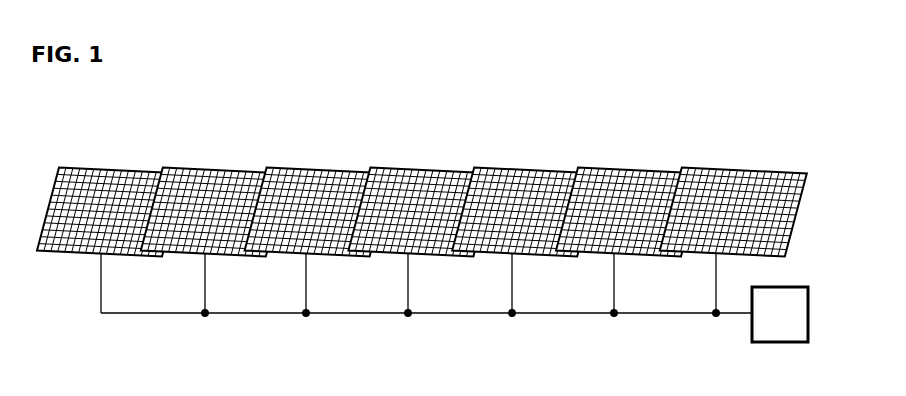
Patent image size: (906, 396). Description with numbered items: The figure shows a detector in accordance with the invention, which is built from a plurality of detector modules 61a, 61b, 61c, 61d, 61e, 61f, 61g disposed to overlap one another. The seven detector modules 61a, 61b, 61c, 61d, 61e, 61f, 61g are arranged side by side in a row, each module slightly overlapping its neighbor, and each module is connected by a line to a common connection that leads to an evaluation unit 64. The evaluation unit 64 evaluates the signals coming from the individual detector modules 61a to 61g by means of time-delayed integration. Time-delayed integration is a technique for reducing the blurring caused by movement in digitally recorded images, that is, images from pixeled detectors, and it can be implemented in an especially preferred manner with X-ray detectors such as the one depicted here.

The detector module 61a is at (125, 172).
The detector module 61b is at (230, 172).
The detector module 61c is at (334, 172).
The detector module 61d is at (437, 172).
The detector module 61e is at (540, 172).
The detector module 61f is at (647, 172).
The detector module 61g is at (745, 172).
The evaluation unit 64 is at (751, 329).